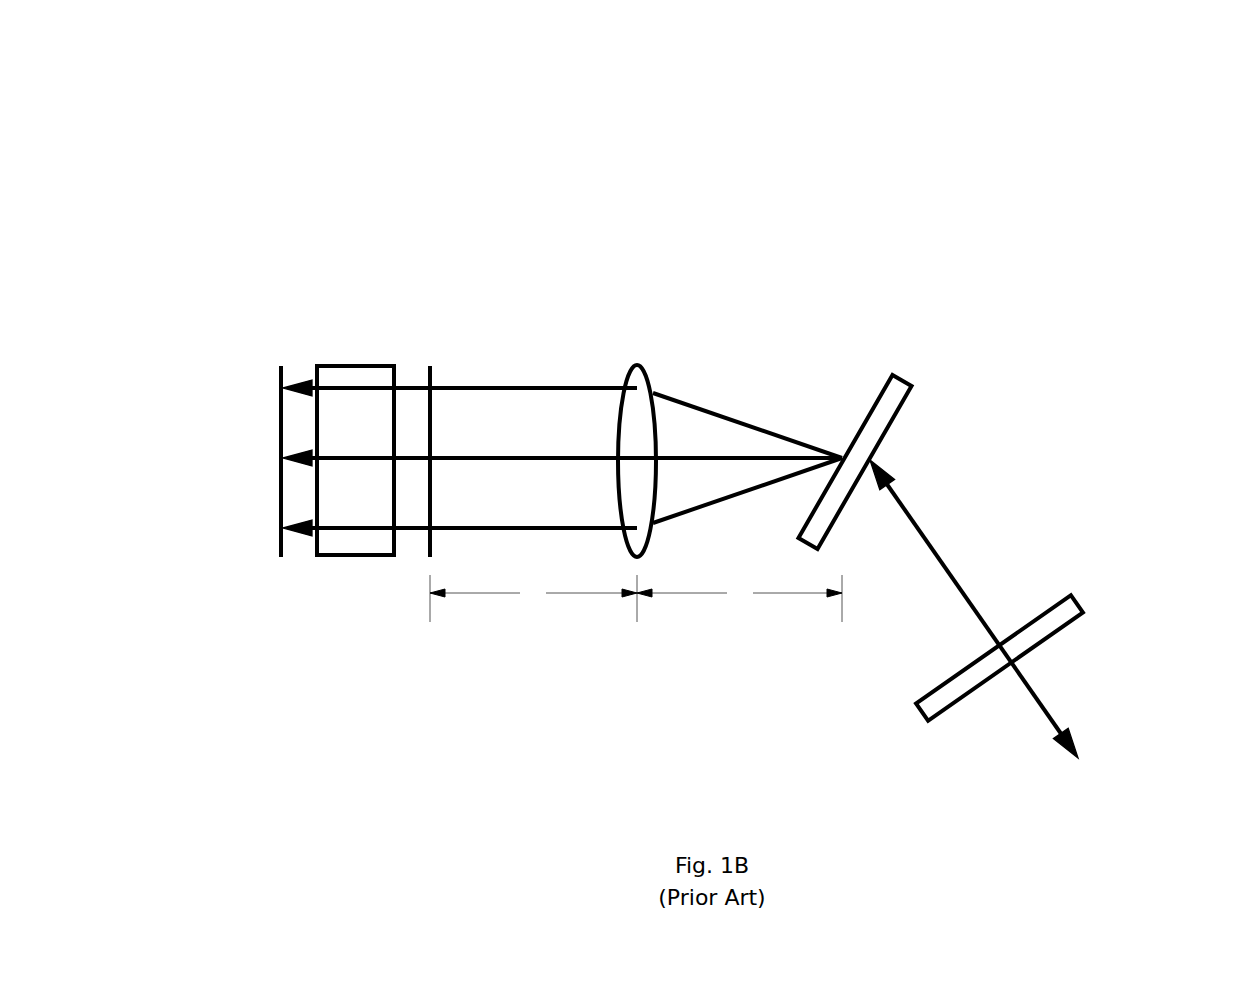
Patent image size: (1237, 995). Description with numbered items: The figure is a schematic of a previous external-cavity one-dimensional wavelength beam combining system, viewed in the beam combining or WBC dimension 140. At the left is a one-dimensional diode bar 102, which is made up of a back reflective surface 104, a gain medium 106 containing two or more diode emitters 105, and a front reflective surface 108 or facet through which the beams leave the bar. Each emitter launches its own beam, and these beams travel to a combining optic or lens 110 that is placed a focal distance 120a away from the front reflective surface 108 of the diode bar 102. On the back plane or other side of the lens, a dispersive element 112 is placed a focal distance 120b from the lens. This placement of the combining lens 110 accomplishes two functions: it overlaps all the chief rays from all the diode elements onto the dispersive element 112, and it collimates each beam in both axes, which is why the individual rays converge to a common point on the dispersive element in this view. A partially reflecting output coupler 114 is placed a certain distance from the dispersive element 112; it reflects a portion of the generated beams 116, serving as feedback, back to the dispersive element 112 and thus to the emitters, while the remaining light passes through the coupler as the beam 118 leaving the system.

The diode bar 102 is at (284, 218).
The back reflective surface 104 is at (281, 360).
The diode emitters 105 is at (355, 388).
The gain medium 106 is at (338, 360).
The front reflective surface 108 is at (430, 362).
The combining optic 110 is at (640, 362).
The dispersive element 112 is at (894, 370).
The partially reflecting output coupler 114 is at (1088, 595).
The generated beams (feedback) 116 is at (955, 580).
The output beam 118 is at (1037, 705).
The focal distance 120a is at (489, 596).
The focal distance 120b is at (752, 610).
The WBC dimension 140 is at (205, 459).